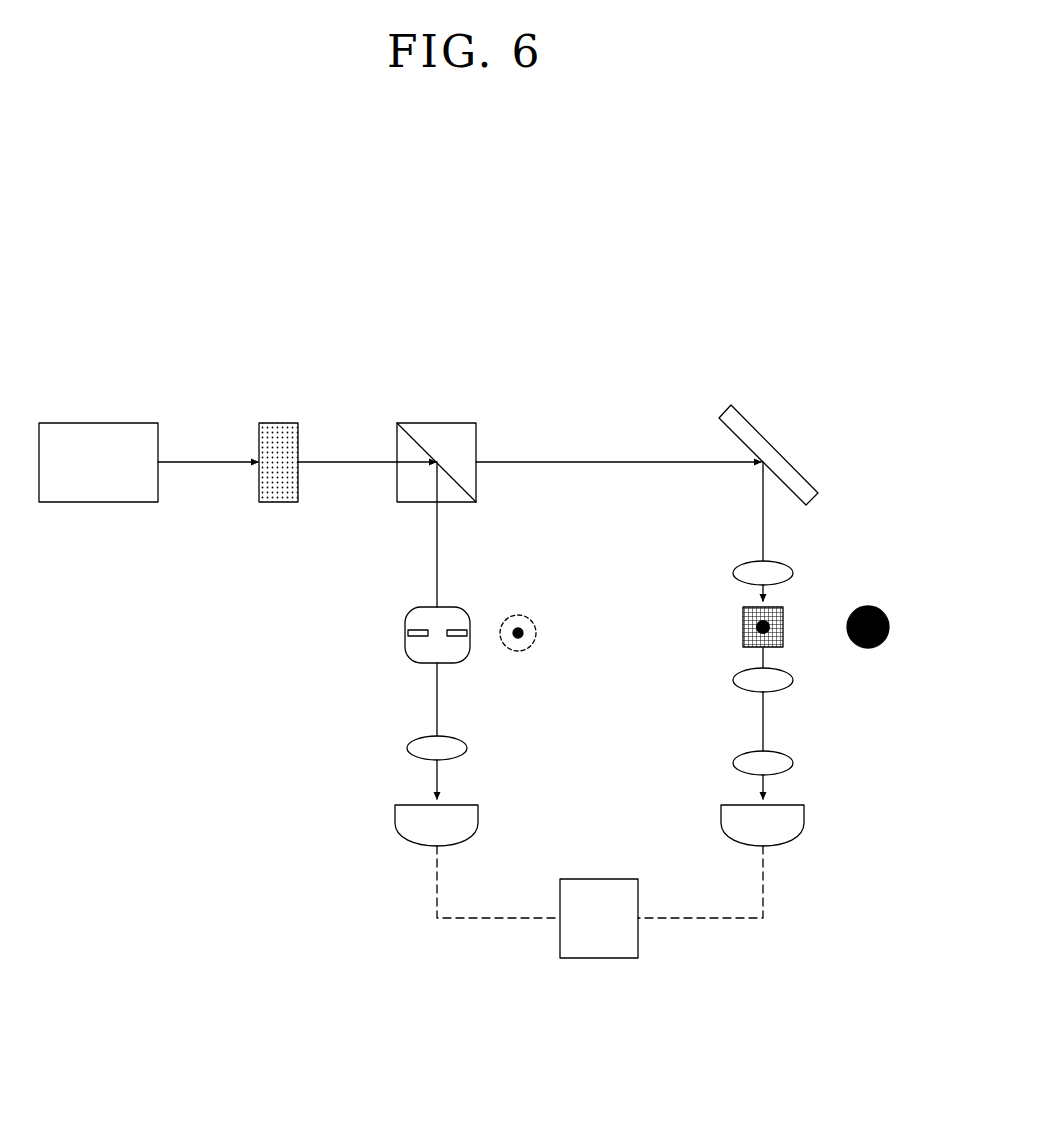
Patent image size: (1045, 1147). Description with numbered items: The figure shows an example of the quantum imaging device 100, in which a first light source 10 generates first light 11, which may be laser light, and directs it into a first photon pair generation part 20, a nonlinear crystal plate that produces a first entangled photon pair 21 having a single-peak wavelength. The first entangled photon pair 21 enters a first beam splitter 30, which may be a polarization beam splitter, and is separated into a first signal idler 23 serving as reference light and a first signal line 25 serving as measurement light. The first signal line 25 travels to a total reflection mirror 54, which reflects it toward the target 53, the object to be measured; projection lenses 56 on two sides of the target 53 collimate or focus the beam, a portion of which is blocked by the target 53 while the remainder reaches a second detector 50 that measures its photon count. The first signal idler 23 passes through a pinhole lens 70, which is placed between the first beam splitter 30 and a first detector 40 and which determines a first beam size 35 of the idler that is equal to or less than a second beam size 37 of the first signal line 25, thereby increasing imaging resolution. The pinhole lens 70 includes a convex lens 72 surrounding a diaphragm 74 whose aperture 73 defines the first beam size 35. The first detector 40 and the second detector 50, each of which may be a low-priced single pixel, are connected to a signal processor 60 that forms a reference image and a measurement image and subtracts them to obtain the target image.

The quantum imaging device 100 is at (730, 336).
The first light source 10 is at (122, 423).
The first light 11 is at (208, 460).
The first photon pair generation part 20 is at (280, 423).
The first entangled photon pair 21 is at (338, 460).
The first beam splitter 30 is at (445, 423).
The first signal line 25 is at (598, 460).
The total reflection mirror 54 is at (775, 445).
The projection lenses 56 is at (750, 560).
The target 53 is at (743, 625).
The second beam size 37 is at (875, 607).
The second detector 50 is at (805, 812).
The pinhole lens 70 is at (374, 635).
The diaphragm 74 is at (405, 630).
The convex lens 72 is at (405, 640).
The aperture 73 is at (439, 630).
The first beam size 35 is at (536, 633).
The first signal idler 23 is at (437, 703).
The first detector 40 is at (478, 812).
The signal processor 60 is at (622, 879).